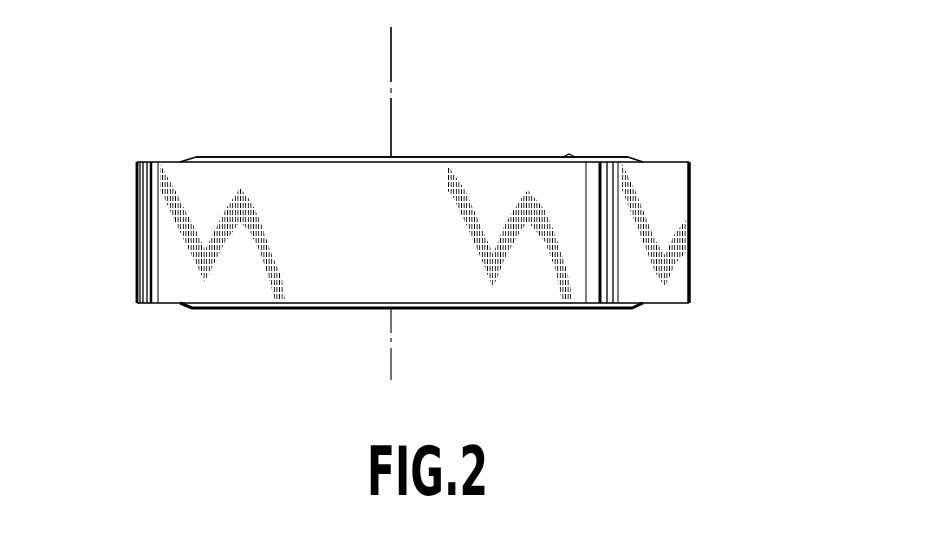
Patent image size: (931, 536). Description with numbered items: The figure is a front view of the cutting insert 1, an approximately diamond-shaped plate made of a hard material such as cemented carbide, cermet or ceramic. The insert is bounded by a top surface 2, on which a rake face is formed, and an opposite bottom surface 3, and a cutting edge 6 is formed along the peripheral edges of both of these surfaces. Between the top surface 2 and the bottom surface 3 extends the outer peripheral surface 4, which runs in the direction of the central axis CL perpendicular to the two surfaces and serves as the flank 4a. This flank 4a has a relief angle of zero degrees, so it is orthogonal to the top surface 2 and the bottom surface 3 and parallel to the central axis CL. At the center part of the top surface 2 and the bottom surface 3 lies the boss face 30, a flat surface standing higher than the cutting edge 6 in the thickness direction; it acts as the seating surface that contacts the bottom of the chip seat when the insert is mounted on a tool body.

The cutting insert 1 is at (297, 157).
The top surface 2 is at (543, 157).
The bottom surface 3 is at (530, 310).
The boss face 30 is at (445, 157).
The outer peripheral surface 4 is at (136, 205).
The flank 4a is at (690, 205).
The cutting edge 6 is at (163, 162).
The central axis CL is at (390, 357).